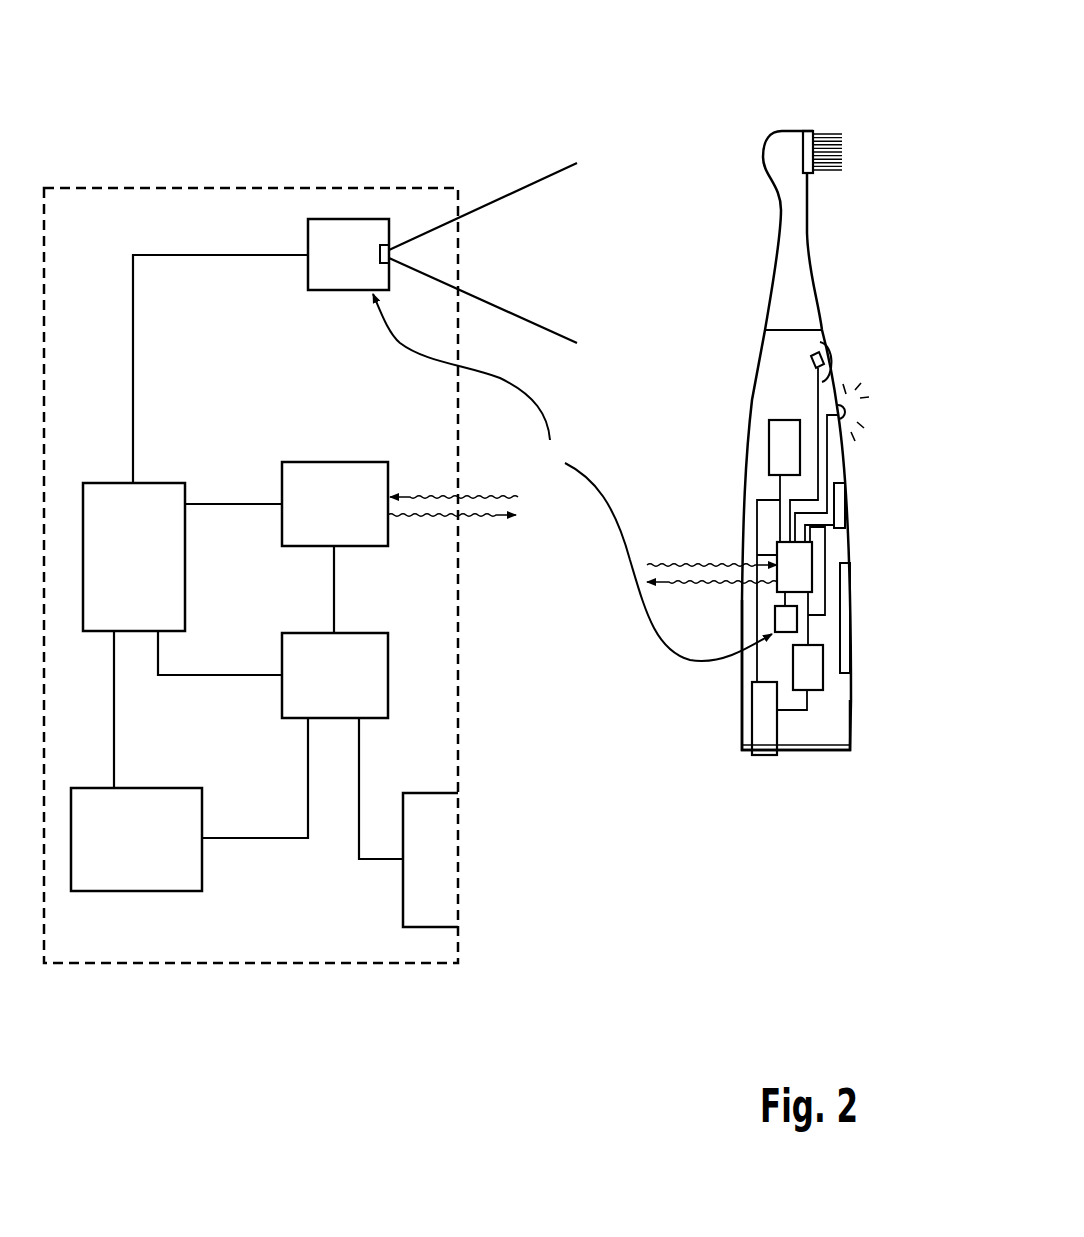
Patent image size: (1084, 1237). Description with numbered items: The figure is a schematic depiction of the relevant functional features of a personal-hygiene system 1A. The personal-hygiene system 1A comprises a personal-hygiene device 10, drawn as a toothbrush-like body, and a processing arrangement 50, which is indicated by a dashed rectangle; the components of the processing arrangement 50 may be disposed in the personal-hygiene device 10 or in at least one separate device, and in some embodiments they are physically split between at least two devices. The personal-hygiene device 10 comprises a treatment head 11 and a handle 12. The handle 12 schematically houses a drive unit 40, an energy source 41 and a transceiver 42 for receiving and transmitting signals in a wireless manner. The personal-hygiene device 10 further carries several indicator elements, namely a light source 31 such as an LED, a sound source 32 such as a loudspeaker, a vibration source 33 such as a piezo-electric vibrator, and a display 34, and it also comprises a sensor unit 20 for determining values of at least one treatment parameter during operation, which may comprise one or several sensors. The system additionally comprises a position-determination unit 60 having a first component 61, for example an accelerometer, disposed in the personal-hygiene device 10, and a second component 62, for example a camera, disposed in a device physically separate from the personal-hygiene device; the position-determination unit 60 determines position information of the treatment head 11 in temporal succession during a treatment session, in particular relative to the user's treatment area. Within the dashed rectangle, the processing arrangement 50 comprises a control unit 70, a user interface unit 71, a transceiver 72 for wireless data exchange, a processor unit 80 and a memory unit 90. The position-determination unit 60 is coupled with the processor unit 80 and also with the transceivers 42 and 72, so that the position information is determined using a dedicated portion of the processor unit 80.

The personal-hygiene system 1A is at (305, 157).
The processing arrangement 50 is at (138, 187).
The second component of the position-determination unit 62 is at (365, 212).
The processor unit 80 is at (172, 584).
The transceiver 72 is at (312, 466).
The control unit 70 is at (290, 700).
The user interface unit 71 is at (416, 895).
The memory unit 90 is at (148, 860).
The position-determination unit 60 is at (572, 477).
The personal-hygiene device 10 is at (798, 777).
The treatment head 11 is at (812, 112).
The handle 12 is at (852, 753).
The sound source 32 is at (829, 356).
The light source 31 is at (848, 417).
The vibration source 33 is at (843, 495).
The display 34 is at (847, 603).
The drive unit 40 is at (783, 441).
The transceiver 42 is at (797, 552).
The first component of the position-determination unit 61 is at (776, 611).
The sensor unit 20 is at (813, 685).
The energy source 41 is at (762, 716).